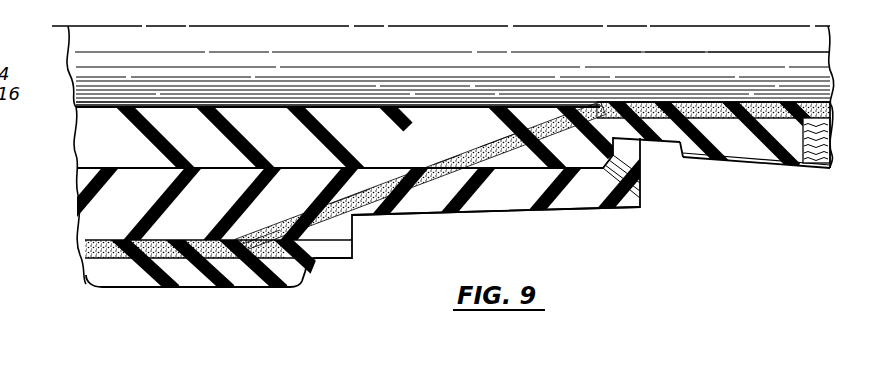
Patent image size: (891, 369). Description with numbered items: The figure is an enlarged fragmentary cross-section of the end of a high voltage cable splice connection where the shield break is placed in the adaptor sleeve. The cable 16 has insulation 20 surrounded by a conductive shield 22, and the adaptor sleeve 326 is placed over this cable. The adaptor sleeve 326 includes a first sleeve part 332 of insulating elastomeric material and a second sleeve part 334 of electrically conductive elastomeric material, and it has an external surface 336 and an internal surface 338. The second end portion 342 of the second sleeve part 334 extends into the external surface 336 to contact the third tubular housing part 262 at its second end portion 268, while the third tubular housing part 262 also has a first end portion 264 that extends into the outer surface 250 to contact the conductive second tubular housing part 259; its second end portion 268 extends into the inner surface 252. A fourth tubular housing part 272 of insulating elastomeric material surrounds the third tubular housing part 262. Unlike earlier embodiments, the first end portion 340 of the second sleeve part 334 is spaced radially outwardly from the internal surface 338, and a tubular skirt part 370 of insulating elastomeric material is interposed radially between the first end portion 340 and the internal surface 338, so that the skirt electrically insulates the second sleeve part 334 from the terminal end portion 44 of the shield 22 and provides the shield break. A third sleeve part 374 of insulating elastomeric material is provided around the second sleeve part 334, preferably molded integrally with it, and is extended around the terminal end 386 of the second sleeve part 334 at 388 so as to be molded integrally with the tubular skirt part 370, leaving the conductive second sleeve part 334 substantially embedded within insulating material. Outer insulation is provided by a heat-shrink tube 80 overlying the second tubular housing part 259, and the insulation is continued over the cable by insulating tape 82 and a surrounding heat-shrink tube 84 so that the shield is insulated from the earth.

The high voltage cable 16 is at (90, 47).
The insulation 20 is at (830, 52).
The conductive shield 22 is at (830, 106).
The insulating tape 82 is at (815, 133).
The adaptor sleeve 326 is at (93, 124).
The first sleeve part 332 is at (186, 93).
The internal surface 338 is at (232, 105).
The first end portion 340 is at (615, 110).
The terminal end portion 44 is at (658, 103).
The tubular skirt part 370 is at (705, 103).
The second sleeve part 334 is at (496, 135).
The second end portion 342 is at (436, 165).
The inner surface 252 is at (264, 168).
The external surface 336 is at (172, 170).
The third tubular housing part 262 is at (350, 203).
The second end portion 268 is at (505, 172).
The first end portion 264 is at (240, 236).
The third sleeve part 374 is at (662, 133).
The heat-shrink tube 84 is at (700, 153).
The terminal end 386 is at (718, 155).
The extension region 388 is at (778, 150).
The fourth tubular housing part 272 is at (486, 208).
The second tubular housing part 259 is at (88, 252).
The heat-shrink tube 80 is at (103, 272).
The outer surface 250 is at (133, 258).